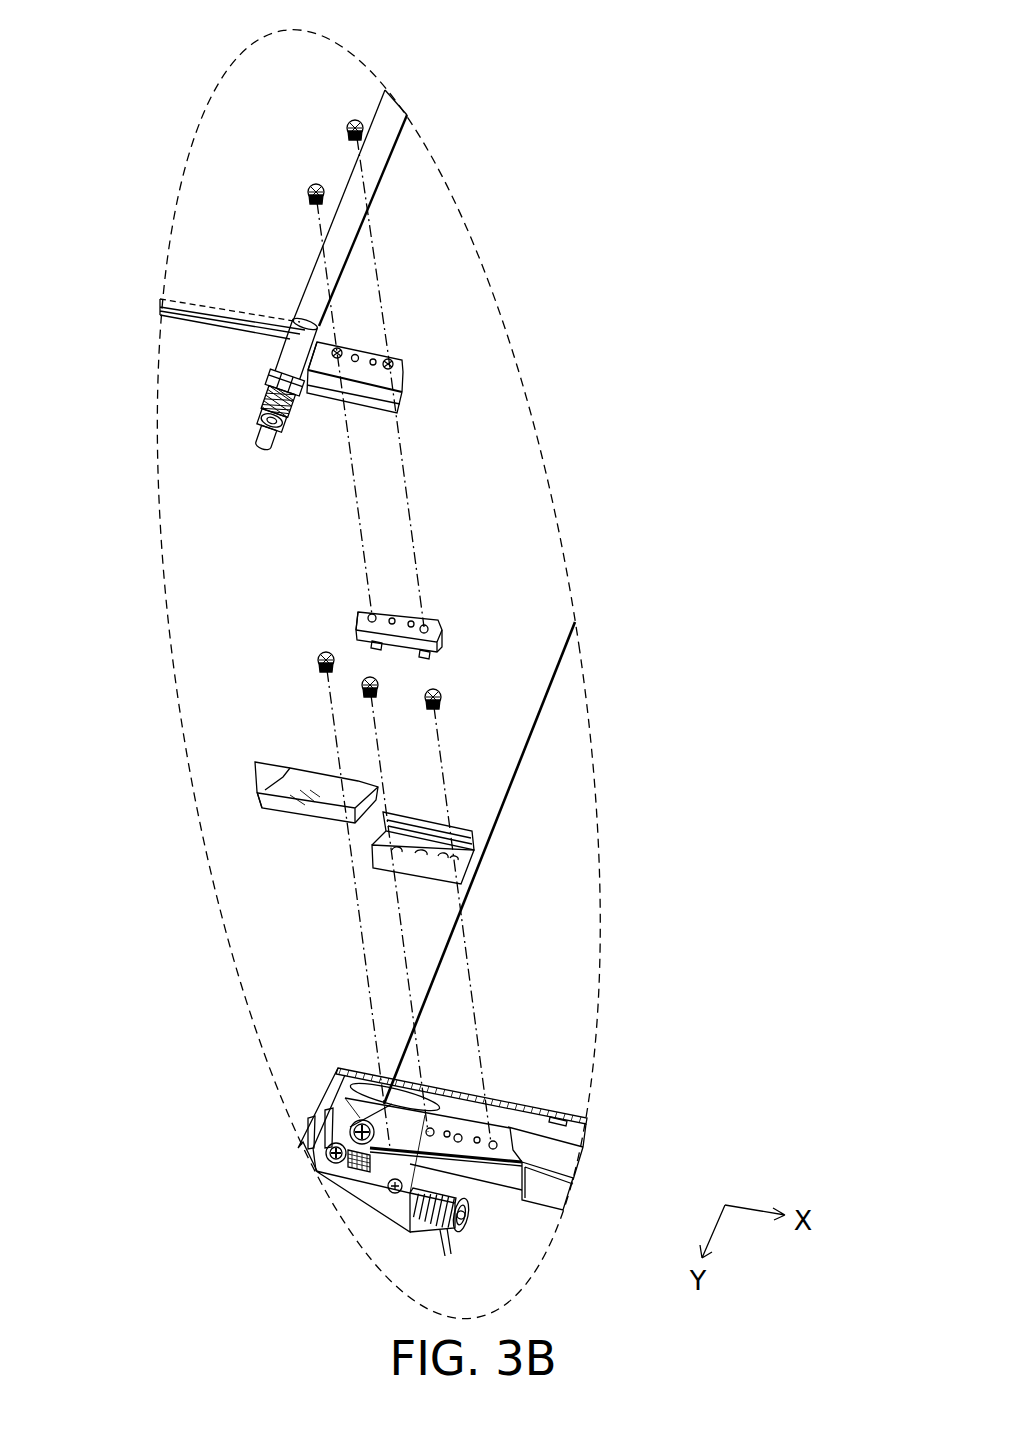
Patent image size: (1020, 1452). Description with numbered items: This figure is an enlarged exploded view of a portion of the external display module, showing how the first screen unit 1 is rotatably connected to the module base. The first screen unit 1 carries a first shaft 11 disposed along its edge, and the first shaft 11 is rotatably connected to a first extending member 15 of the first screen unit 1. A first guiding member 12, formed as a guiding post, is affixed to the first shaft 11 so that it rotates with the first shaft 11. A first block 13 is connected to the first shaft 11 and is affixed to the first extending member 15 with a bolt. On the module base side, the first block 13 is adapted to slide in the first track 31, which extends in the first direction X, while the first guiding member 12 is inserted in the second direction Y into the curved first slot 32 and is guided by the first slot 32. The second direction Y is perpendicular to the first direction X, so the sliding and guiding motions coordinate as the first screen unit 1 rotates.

The first screen unit 1 is at (183, 320).
The first shaft 11 is at (268, 397).
The first guiding member 12 is at (262, 431).
The first block 13 is at (441, 628).
The first extending member 15 is at (400, 375).
The first track 31 is at (470, 850).
The first slot 32 is at (258, 795).